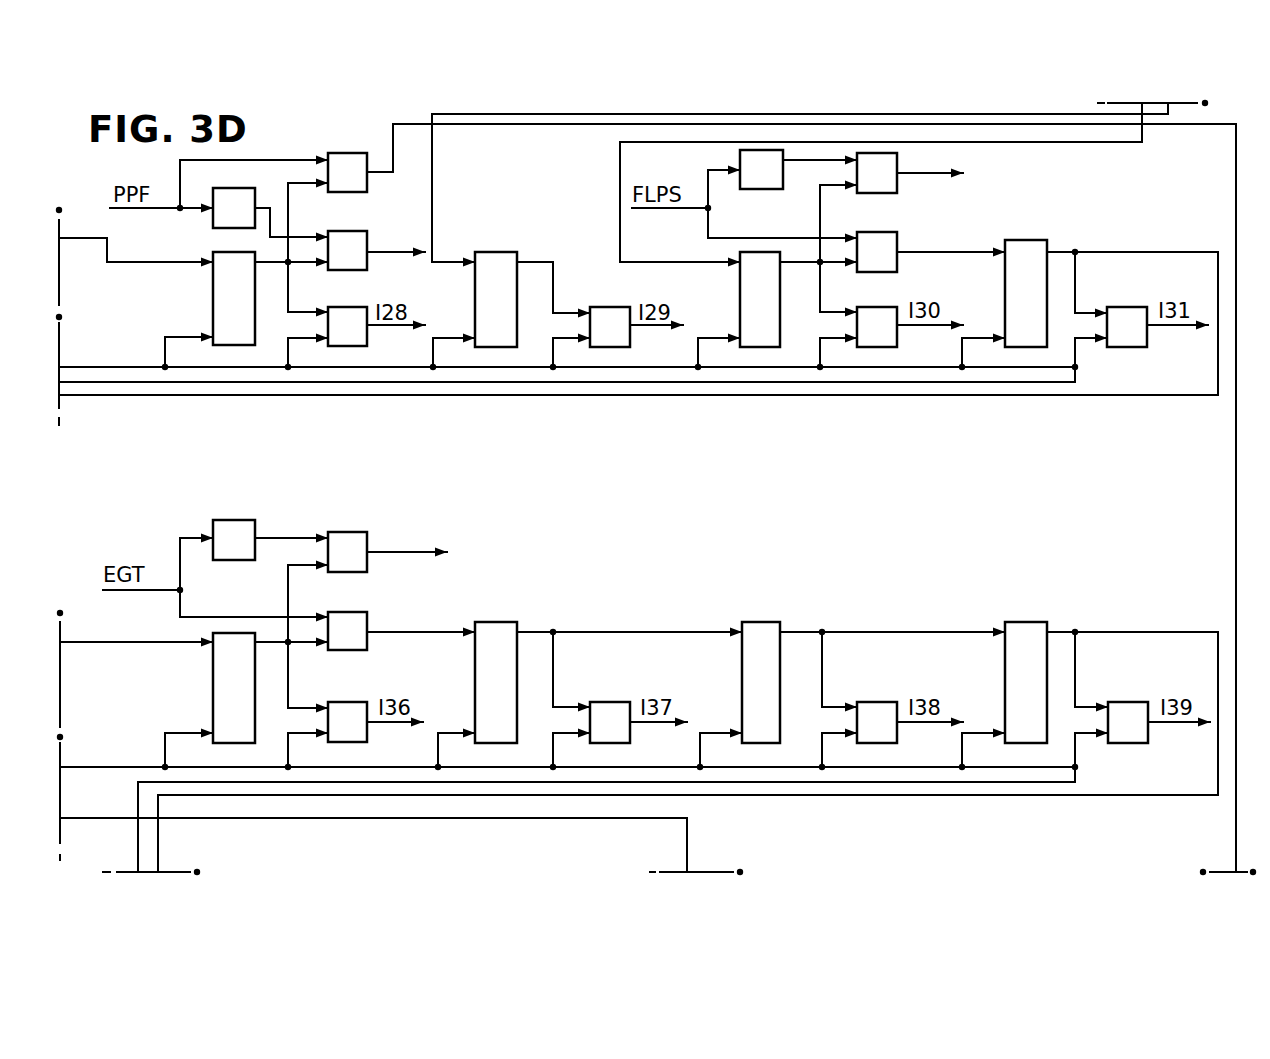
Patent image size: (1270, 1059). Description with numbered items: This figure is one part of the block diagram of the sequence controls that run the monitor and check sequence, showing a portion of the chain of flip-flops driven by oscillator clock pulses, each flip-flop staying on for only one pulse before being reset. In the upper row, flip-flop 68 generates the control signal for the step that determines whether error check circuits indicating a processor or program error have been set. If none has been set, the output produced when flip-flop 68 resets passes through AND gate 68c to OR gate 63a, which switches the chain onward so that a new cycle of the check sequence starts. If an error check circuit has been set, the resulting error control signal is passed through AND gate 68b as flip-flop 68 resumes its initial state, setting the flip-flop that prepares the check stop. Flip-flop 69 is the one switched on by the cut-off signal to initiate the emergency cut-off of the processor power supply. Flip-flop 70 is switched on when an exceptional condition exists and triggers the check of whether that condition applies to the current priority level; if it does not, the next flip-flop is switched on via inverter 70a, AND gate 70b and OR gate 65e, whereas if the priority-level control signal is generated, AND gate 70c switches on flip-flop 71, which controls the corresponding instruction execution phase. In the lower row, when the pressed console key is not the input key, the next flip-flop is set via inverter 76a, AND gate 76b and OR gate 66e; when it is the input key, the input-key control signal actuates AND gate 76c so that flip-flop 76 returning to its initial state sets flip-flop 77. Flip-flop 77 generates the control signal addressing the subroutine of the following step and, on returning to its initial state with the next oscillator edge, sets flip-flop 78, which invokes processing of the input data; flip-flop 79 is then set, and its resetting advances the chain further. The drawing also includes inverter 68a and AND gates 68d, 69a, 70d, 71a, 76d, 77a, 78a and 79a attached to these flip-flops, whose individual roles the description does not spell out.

The flip-flop 68 is at (215, 283).
The inverter 68a is at (215, 212).
The AND gate 68b is at (343, 153).
The AND gate 68c is at (362, 262).
The AND gate 68d is at (346, 307).
The flip-flop 69 is at (498, 256).
The AND gate 69a is at (610, 307).
The flip-flop 70 is at (745, 275).
The inverter 70a is at (770, 188).
The AND gate 70b is at (878, 190).
The AND gate 70c is at (885, 235).
The AND gate 70d is at (876, 308).
The flip-flop 71 is at (1033, 248).
The AND gate 71a is at (1133, 343).
The flip-flop 76 is at (215, 680).
The inverter 76a is at (235, 520).
The AND gate 76b is at (345, 532).
The AND gate 76c is at (357, 612).
The AND gate 76d is at (350, 702).
The flip-flop 77 is at (502, 622).
The AND gate 77a is at (610, 702).
The flip-flop 78 is at (755, 622).
The AND gate 78a is at (883, 702).
The flip-flop 79 is at (1020, 622).
The AND gate 79a is at (1133, 702).
The OR gate 63a is at (396, 240).
The OR gate 65e is at (930, 164).
The OR gate 66e is at (407, 542).